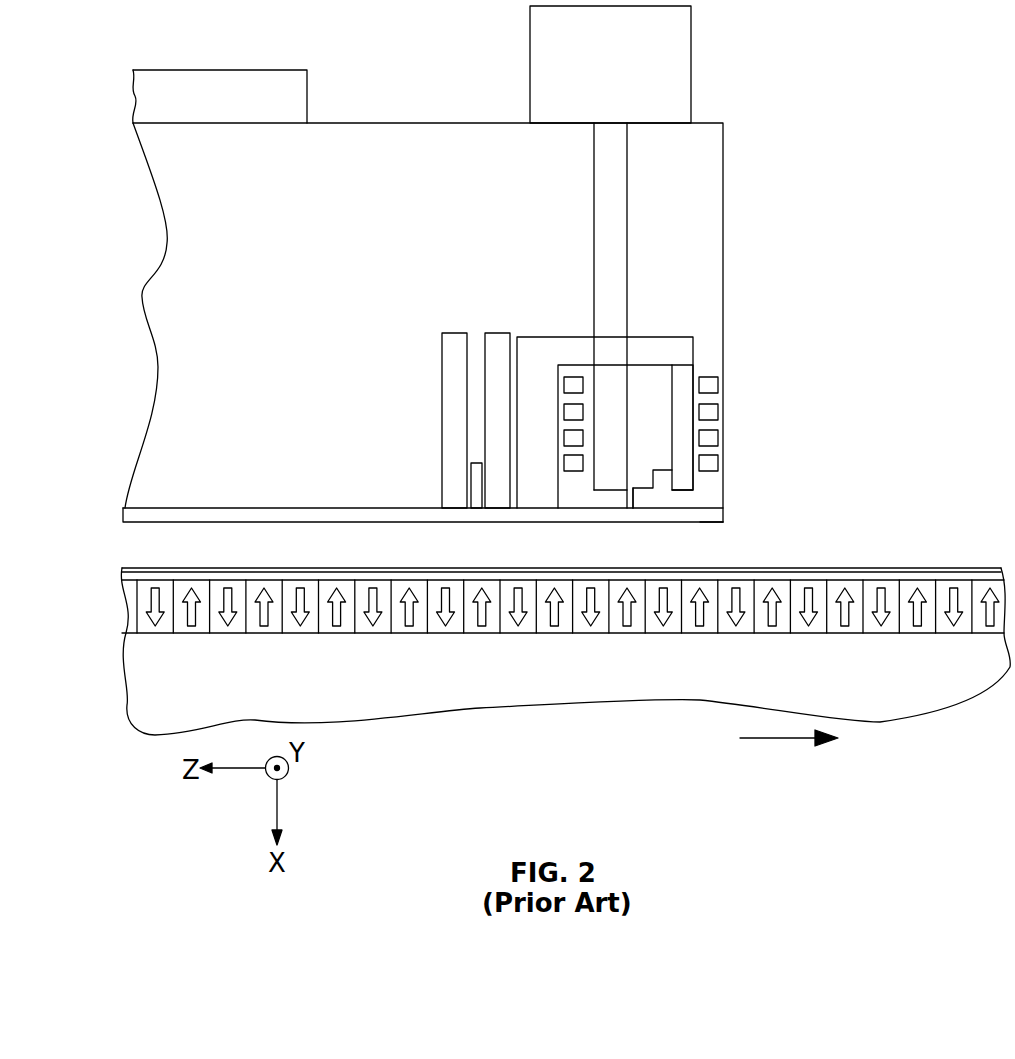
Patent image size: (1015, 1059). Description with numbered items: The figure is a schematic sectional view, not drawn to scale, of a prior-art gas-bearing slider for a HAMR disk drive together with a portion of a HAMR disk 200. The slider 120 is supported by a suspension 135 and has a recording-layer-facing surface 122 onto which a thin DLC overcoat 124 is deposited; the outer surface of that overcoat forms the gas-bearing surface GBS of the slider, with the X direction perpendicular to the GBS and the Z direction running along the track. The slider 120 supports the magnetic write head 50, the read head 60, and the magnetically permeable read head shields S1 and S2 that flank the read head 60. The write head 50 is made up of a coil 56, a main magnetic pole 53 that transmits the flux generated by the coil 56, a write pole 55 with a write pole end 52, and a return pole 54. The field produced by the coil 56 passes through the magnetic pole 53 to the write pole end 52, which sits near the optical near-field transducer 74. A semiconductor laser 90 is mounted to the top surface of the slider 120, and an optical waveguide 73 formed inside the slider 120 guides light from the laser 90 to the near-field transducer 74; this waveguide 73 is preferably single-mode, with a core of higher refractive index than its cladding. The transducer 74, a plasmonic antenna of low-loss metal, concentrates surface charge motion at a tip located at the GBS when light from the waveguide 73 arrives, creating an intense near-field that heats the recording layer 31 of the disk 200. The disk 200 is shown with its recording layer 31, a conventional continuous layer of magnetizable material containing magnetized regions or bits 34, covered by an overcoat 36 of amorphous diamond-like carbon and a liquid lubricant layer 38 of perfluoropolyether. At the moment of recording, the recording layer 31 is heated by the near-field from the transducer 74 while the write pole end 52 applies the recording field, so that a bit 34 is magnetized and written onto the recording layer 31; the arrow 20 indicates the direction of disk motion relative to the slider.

The gas-bearing slider 120 is at (168, 397).
The suspension 135 is at (298, 77).
The semiconductor laser 90 is at (678, 62).
The recording-layer-facing surface 122 is at (243, 507).
The overcoat 124 is at (278, 522).
The gas-bearing surface GBS is at (703, 521).
The magnetic write head 50 is at (533, 268).
The optical waveguide 73 is at (610, 277).
The optical near-field transducer 74 is at (608, 487).
The return pole 54 is at (538, 346).
The main magnetic pole 53 is at (685, 357).
The write pole end 52 is at (644, 487).
The write pole 55 is at (660, 500).
The read head shield S2 is at (498, 333).
The read head shield S1 is at (452, 418).
The read head 60 is at (462, 496).
The coil 56 is at (556, 370).
The disk 200 is at (883, 700).
The liquid lubricant layer 38 is at (825, 570).
The overcoat 36 is at (893, 576).
The bits 34 is at (953, 585).
The recording layer 31 is at (536, 580).
The direction of media motion 20 is at (775, 745).